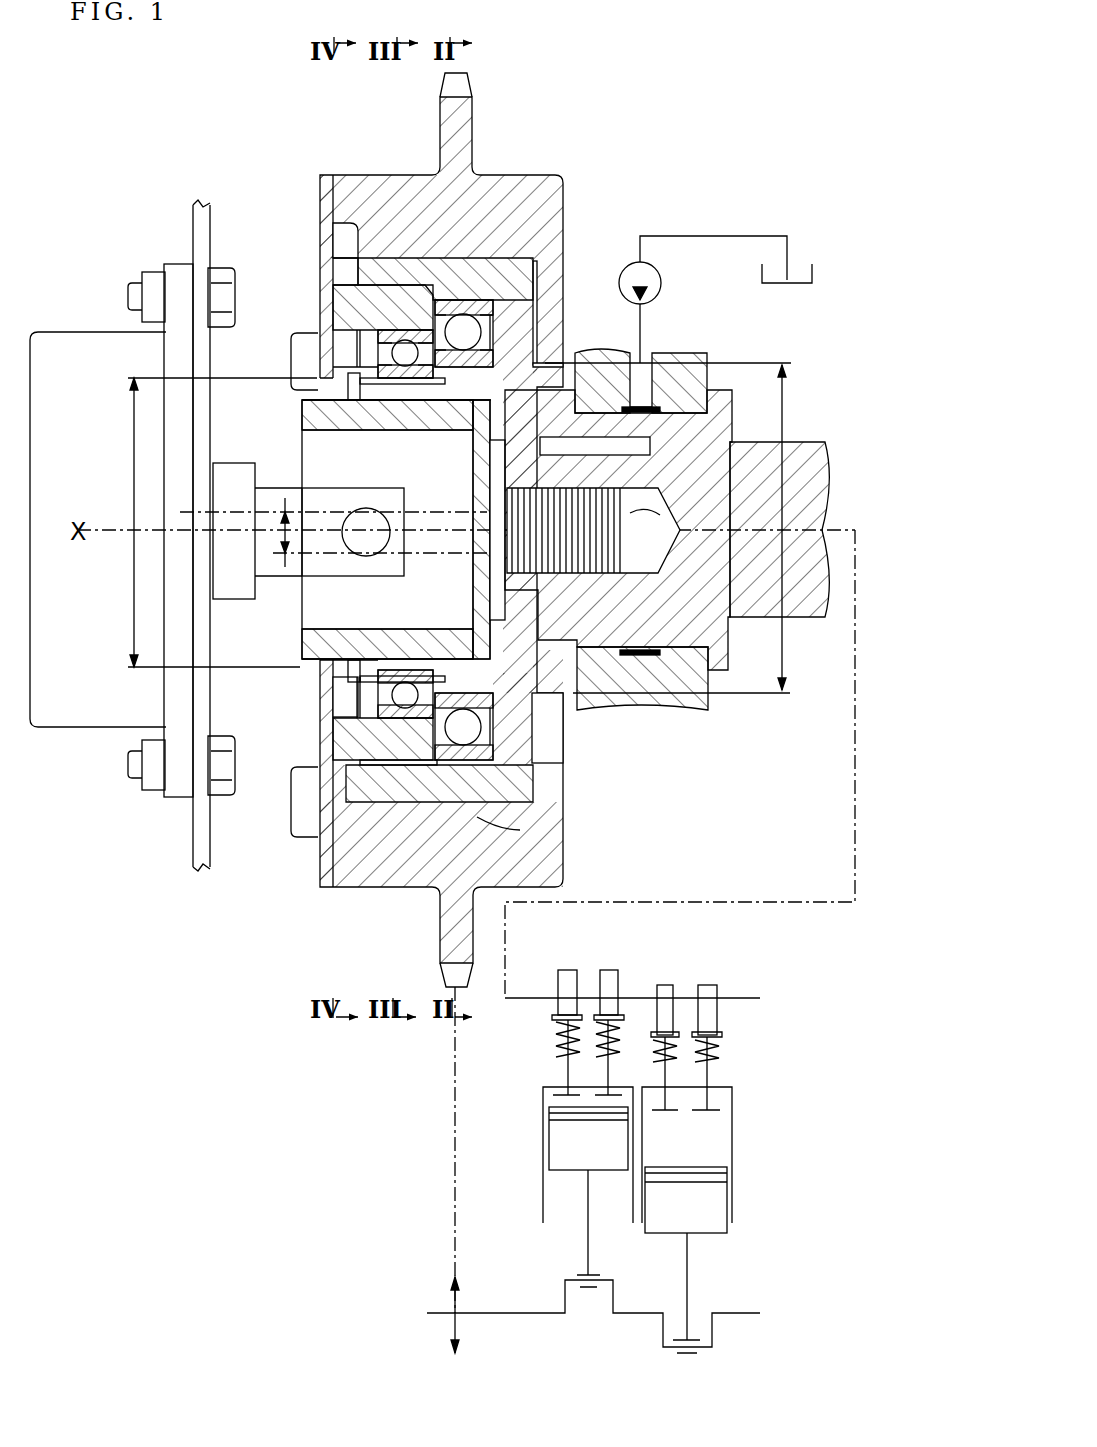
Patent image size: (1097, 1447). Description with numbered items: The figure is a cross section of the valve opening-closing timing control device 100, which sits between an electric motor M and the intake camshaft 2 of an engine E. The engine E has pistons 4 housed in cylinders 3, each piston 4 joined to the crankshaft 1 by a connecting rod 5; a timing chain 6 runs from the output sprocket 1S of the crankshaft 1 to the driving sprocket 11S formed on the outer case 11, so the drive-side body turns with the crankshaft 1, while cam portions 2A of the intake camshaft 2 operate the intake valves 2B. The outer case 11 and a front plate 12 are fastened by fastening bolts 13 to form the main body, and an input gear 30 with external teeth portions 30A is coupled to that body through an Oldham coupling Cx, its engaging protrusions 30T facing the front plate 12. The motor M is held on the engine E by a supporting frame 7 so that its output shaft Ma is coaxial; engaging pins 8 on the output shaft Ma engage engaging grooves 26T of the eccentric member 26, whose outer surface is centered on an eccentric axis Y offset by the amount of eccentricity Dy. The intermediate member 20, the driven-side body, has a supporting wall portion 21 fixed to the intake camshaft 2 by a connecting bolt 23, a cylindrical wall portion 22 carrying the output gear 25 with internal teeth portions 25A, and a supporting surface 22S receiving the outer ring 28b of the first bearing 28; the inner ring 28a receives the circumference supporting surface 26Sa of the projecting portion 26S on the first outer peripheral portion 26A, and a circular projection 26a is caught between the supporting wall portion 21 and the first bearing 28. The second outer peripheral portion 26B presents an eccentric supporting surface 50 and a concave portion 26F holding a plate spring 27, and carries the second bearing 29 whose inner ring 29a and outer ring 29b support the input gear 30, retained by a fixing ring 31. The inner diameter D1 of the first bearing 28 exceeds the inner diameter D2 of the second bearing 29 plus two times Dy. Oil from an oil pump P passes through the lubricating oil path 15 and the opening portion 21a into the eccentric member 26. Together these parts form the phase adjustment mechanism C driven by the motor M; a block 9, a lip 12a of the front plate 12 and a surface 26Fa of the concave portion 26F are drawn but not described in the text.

The valve opening-closing timing control device 100 is at (261, 110).
The crankshaft 1 is at (497, 1313).
The output sprocket 1S is at (450, 1300).
The intake camshaft 2 is at (814, 446).
The cam portions 2A is at (605, 970).
The intake valves 2B is at (607, 1100).
The cylinders 3 is at (543, 1098).
The pistons 4 is at (563, 1167).
The connecting rod 5 is at (588, 1252).
The timing chain 6 is at (455, 1143).
The supporting frame 7 is at (191, 225).
The engaging pins 8 is at (370, 536).
The oil passage block 9 is at (698, 378).
The outer case 11 is at (543, 170).
The driving sprocket 11S is at (467, 112).
The front plate 12 is at (319, 195).
The front plate lip 12a is at (335, 822).
The fastening bolts 13 is at (303, 340).
The lubricating oil path 15 is at (653, 445).
The intermediate member 20 is at (538, 648).
The supporting wall portion 21 is at (600, 700).
The opening portion 21a is at (630, 410).
The cylindrical wall portion 22 is at (420, 257).
The supporting surface 22S is at (480, 800).
The connecting bolt 23 is at (637, 513).
The output gear 25 is at (520, 830).
The internal teeth portions 25A is at (570, 858).
The eccentric member 26 is at (295, 644).
The first outer peripheral portion 26A is at (478, 640).
The second outer peripheral portion 26B is at (378, 644).
The concave portion 26F is at (387, 444).
The flange face 26Fa is at (406, 404).
The projecting portion 26S is at (500, 790).
The circumference supporting surface 26Sa is at (592, 630).
The engaging grooves 26T is at (330, 520).
The circular projection 26a is at (520, 757).
The plate spring 27 is at (378, 384).
The first bearing 28 is at (483, 327).
The inner ring 28a is at (500, 330).
The outer ring 28b is at (534, 275).
The second bearing 29 is at (395, 352).
The inner ring 29a is at (385, 372).
The outer ring 29b is at (389, 320).
The input gear 30 is at (345, 740).
The external teeth portions 30A is at (395, 870).
The engaging protrusions 30T is at (334, 752).
The fixing ring 31 is at (351, 385).
The eccentric supporting surface 50 is at (400, 663).
The phase adjustment mechanism C is at (281, 408).
The Oldham coupling Cx is at (352, 840).
The inner diameter of the first bearing D1 is at (682, 528).
The inner diameter of the second bearing D2 is at (207, 522).
The amount of eccentricity Dy is at (282, 508).
The engine E is at (849, 140).
The electric motor M is at (89, 325).
The output shaft Ma is at (236, 470).
The oil pump P is at (662, 283).
The eccentric axis Y is at (234, 508).